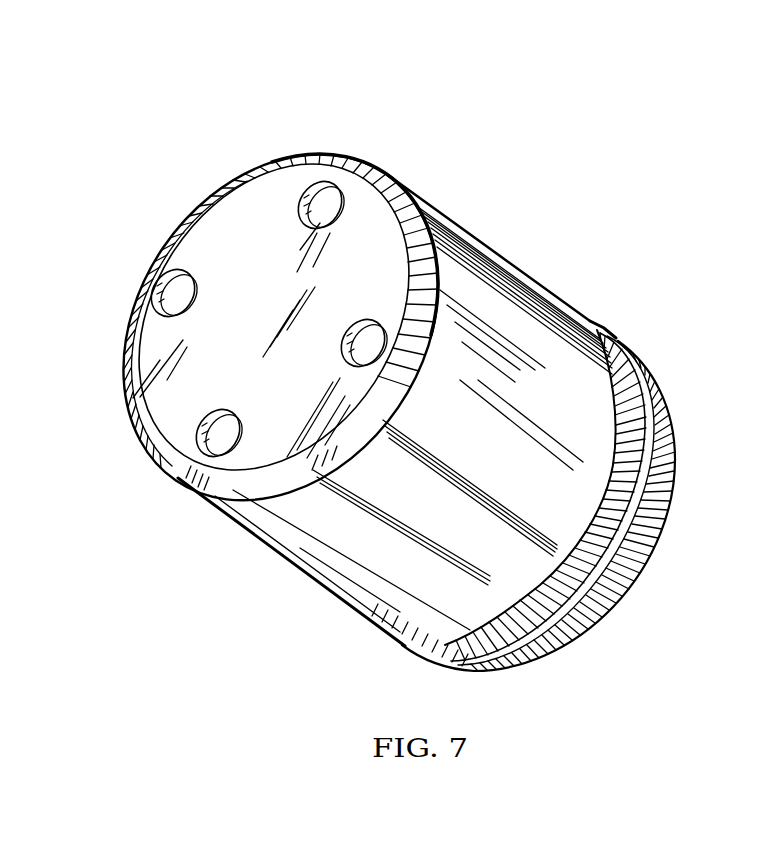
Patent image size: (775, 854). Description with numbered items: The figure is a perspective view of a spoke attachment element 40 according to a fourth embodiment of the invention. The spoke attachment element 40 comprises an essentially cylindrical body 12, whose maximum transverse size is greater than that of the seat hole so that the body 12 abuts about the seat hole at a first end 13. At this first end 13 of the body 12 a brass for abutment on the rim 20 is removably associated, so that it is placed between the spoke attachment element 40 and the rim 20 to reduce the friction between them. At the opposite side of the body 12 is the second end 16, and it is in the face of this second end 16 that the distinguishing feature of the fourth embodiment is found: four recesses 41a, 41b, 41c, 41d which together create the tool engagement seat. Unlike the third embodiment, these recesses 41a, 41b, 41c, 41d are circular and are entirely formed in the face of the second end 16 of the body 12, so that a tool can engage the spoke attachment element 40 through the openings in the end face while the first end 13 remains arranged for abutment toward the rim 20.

The spoke attachment element 40 is at (406, 112).
The second end 16 is at (325, 142).
The recess 41a is at (320, 205).
The recess 41b is at (365, 345).
The recess 41c is at (222, 440).
The recess 41d is at (180, 292).
The body 12 is at (530, 287).
The first end 13 is at (668, 360).
The rim 20 is at (585, 612).